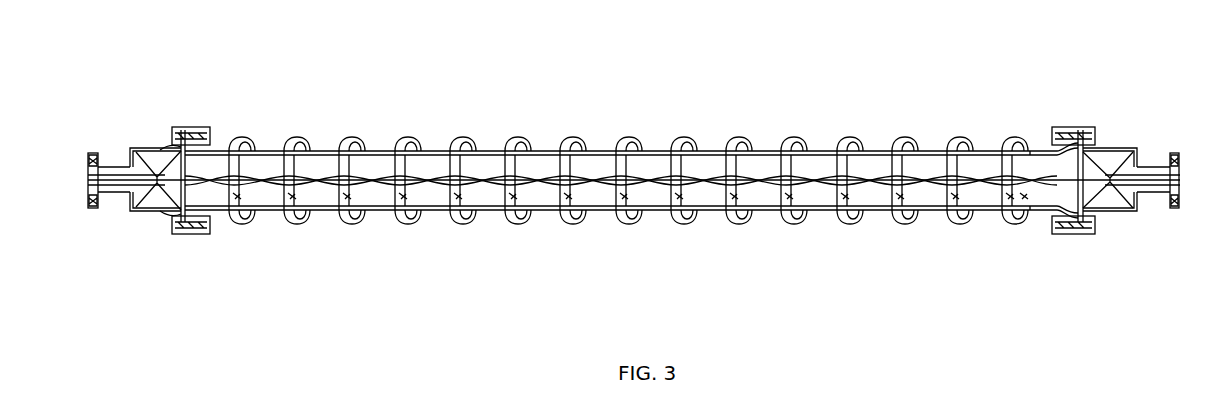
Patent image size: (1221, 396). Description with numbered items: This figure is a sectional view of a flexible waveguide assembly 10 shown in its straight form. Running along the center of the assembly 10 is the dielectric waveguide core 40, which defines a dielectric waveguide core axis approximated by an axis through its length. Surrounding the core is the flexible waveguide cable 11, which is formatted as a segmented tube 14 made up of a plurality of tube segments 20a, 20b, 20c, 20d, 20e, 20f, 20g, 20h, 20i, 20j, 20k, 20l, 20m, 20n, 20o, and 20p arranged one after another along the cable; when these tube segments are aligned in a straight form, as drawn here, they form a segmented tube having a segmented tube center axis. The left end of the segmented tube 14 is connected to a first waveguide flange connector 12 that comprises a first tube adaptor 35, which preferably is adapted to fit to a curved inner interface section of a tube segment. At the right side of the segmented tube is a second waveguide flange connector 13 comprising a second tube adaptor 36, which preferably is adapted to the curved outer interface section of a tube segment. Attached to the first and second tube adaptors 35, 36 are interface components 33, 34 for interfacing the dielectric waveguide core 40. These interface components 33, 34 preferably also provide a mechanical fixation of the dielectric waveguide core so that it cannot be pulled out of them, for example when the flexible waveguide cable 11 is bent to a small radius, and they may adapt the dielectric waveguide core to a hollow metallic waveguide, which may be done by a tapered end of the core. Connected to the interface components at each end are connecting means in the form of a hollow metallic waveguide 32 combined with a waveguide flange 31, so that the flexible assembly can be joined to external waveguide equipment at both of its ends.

The waveguide assembly 10 is at (748, 46).
The flexible waveguide cable 11 is at (460, 132).
The first waveguide flange connector 12 is at (138, 212).
The second waveguide flange connector 13 is at (1128, 212).
The segmented tube 14 is at (553, 302).
The tube segment 20a is at (241, 224).
The tube segment 20b is at (296, 224).
The tube segment 20c is at (351, 224).
The tube segment 20d is at (407, 224).
The tube segment 20e is at (462, 224).
The tube segment 20f is at (517, 224).
The tube segment 20g is at (572, 224).
The tube segment 20h is at (628, 224).
The tube segment 20i is at (683, 224).
The tube segment 20j is at (738, 224).
The tube segment 20k is at (793, 224).
The tube segment 20l is at (849, 224).
The tube segment 20m is at (903, 224).
The tube segment 20n is at (959, 224).
The tube segment 20o is at (1013, 224).
The tube segment 20p is at (1047, 214).
The waveguide flange 31 is at (97, 153).
The hollow metallic waveguide 32 is at (116, 167).
The interface component 33 is at (151, 150).
The interface component 34 is at (163, 213).
The first tube adaptor 35 is at (193, 127).
The second tube adaptor 36 is at (1073, 127).
The dielectric waveguide core 40 is at (605, 150).